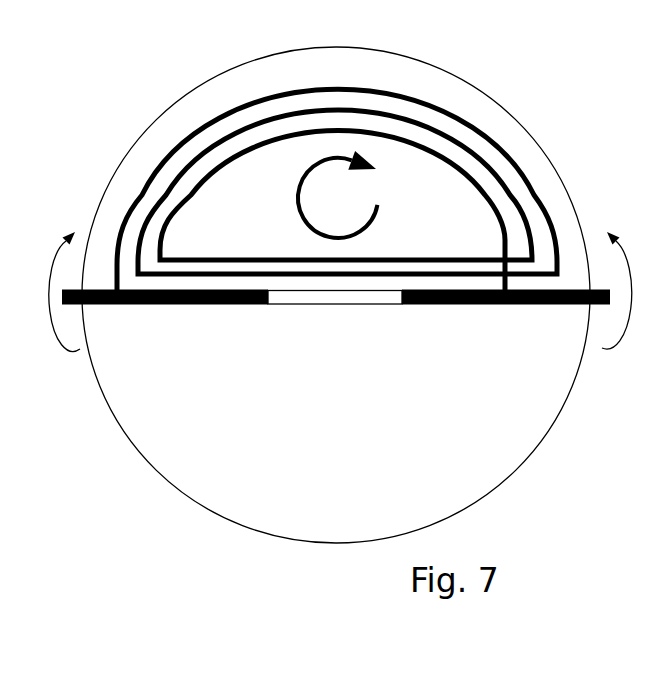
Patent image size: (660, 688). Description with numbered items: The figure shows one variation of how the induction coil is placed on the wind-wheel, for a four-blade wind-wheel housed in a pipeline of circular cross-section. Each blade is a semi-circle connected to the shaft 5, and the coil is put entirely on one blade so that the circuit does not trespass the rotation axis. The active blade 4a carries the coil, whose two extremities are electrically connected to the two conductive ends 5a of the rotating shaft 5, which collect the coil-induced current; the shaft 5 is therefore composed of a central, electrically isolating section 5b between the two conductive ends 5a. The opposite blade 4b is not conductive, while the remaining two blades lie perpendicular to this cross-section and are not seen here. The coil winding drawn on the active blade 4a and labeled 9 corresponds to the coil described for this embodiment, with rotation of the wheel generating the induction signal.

The active blade 4a is at (336, 171).
The opposite blade 4b is at (336, 419).
The shaft 5 is at (344, 291).
The conductive ends 5a is at (336, 315).
The central electrically isolating section 5b is at (335, 301).
The coil spring 9 is at (337, 190).